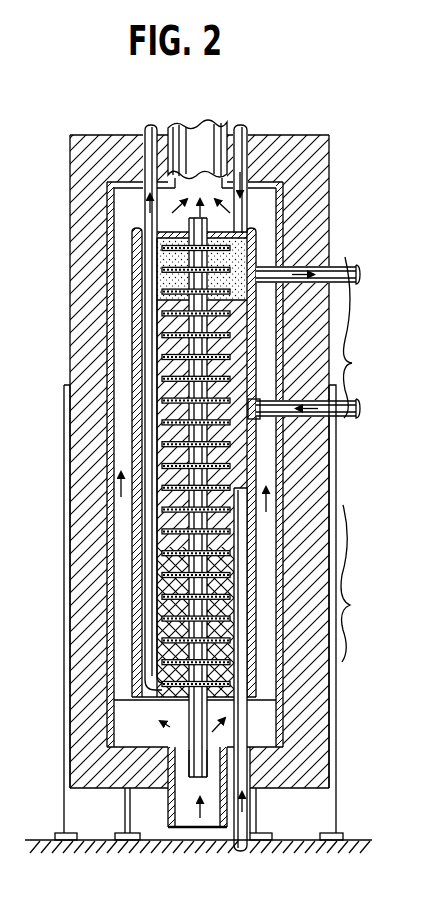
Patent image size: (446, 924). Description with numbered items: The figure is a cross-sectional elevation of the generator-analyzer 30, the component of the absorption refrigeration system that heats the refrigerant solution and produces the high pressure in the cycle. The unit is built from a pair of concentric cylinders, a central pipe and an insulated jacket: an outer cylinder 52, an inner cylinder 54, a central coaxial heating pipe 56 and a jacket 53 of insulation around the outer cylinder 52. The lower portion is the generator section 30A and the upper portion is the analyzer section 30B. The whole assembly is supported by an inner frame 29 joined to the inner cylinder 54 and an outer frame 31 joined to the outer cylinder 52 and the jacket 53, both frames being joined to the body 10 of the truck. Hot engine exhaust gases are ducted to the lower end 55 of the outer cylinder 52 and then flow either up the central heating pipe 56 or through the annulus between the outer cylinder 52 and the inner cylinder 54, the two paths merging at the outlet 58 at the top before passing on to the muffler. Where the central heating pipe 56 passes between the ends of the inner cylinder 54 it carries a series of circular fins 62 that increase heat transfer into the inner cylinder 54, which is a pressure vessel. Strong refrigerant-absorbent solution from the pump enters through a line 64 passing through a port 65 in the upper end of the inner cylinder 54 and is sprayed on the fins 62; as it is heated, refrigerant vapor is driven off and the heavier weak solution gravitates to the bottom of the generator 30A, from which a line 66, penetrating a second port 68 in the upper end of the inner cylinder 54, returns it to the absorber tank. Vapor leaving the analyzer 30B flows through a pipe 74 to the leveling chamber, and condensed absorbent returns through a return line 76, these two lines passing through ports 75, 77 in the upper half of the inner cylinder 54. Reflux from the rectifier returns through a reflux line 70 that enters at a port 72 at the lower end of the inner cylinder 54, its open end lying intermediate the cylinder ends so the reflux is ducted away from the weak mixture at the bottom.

The body 10 is at (38, 834).
The inner frame 29 is at (263, 798).
The generator-analyzer 30 is at (376, 702).
The generator section 30A is at (371, 583).
The analyzer section 30B is at (375, 337).
The outer frame 31 is at (334, 837).
The outer cylinder 52 is at (140, 753).
The jacket 53 is at (85, 432).
The inner cylinder 54 is at (135, 712).
The lower end 55 is at (196, 830).
The central heating pipe 56 is at (192, 790).
The outlet 58 is at (198, 172).
The circular fins 62 is at (167, 358).
The line 64 is at (283, 203).
The port 65 is at (266, 214).
The line 66 is at (147, 683).
The second port 68 is at (140, 226).
The reflux line 70 is at (240, 827).
The port 72 is at (250, 716).
The pipe 74 is at (358, 284).
The port 75 is at (272, 258).
The return line 76 is at (350, 416).
The port 77 is at (258, 420).